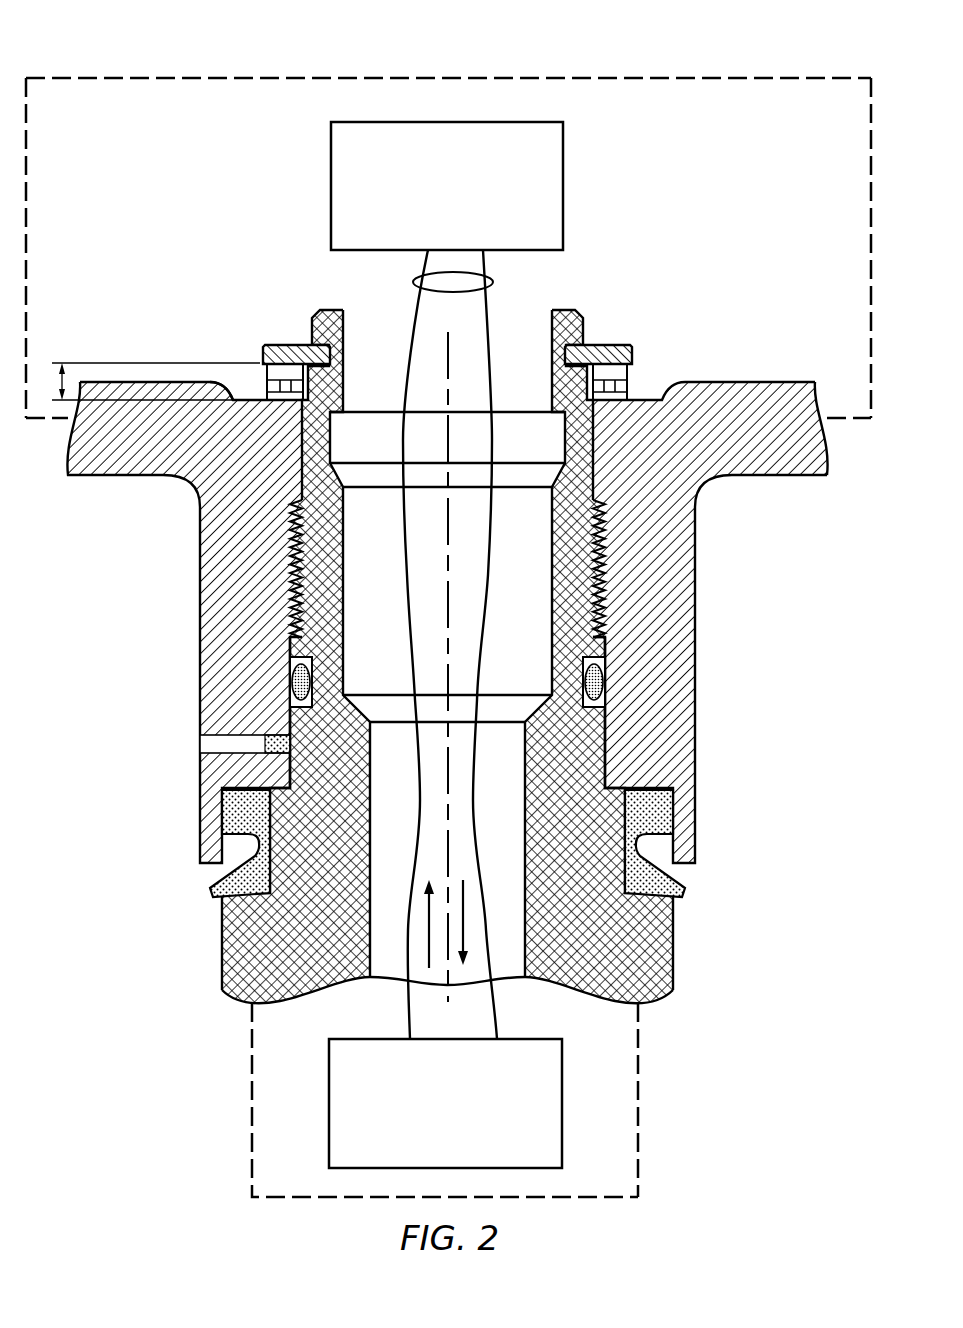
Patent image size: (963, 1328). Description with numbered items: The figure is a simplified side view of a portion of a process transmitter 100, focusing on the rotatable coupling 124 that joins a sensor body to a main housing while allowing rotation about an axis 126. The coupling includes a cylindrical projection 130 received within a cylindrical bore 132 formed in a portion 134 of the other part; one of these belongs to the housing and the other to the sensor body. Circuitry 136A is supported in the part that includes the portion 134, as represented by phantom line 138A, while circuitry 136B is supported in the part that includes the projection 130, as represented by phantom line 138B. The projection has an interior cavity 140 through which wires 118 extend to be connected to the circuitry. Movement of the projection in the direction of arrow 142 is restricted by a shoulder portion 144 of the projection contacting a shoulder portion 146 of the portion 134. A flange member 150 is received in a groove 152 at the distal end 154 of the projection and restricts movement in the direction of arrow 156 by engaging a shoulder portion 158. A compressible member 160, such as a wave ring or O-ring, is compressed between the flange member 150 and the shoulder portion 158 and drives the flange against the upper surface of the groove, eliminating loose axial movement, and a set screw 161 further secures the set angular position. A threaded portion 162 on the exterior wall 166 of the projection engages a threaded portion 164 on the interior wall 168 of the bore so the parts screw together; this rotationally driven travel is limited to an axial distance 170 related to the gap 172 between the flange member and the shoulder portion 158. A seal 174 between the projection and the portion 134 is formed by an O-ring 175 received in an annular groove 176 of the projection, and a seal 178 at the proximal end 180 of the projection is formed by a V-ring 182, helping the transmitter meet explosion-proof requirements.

The process transmitter 100 is at (118, 45).
The wires 118 is at (492, 280).
The rotatable coupling 124 is at (130, 1020).
The axis 126 is at (446, 360).
The cylindrical projection 130 is at (307, 727).
The cylindrical bore 132 is at (280, 648).
The portion having the bore 134 is at (228, 535).
The circuitry 136A is at (553, 150).
The circuitry 136B is at (329, 1098).
The phantom line 138A is at (871, 228).
The phantom line 138B is at (638, 1102).
The interior cavity 140 is at (386, 888).
The arrow 142 is at (430, 930).
The shoulder portion 144 is at (273, 794).
The shoulder portion 146 is at (282, 783).
The flange member 150 is at (613, 347).
The groove 152 is at (296, 338).
The distal end 154 is at (567, 312).
The arrow 156 is at (463, 927).
The shoulder portion 158 is at (230, 393).
The compressible member 160 is at (268, 380).
The set screw 161 is at (265, 745).
The threaded portion 162 is at (582, 354).
The threaded portion 164 is at (620, 569).
The exterior wall 166 is at (603, 458).
The interior wall 168 is at (580, 432).
The axial distance 170 is at (245, 350).
The gap 172 is at (64, 372).
The seal 174 is at (568, 650).
The O-ring 175 is at (602, 678).
The annular groove 176 is at (606, 653).
The seal 178 is at (668, 807).
The proximal end 180 is at (683, 751).
The V-ring 182 is at (657, 823).